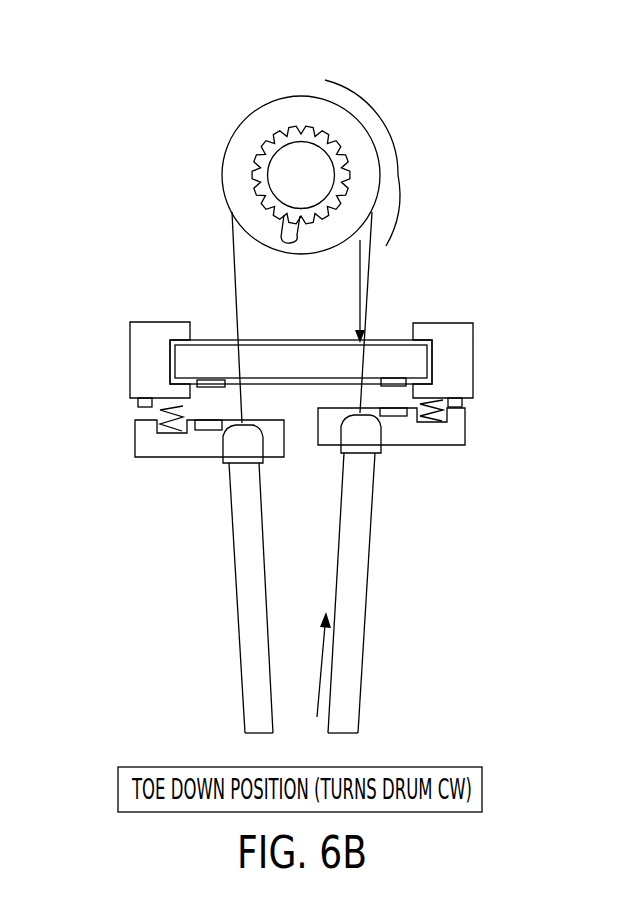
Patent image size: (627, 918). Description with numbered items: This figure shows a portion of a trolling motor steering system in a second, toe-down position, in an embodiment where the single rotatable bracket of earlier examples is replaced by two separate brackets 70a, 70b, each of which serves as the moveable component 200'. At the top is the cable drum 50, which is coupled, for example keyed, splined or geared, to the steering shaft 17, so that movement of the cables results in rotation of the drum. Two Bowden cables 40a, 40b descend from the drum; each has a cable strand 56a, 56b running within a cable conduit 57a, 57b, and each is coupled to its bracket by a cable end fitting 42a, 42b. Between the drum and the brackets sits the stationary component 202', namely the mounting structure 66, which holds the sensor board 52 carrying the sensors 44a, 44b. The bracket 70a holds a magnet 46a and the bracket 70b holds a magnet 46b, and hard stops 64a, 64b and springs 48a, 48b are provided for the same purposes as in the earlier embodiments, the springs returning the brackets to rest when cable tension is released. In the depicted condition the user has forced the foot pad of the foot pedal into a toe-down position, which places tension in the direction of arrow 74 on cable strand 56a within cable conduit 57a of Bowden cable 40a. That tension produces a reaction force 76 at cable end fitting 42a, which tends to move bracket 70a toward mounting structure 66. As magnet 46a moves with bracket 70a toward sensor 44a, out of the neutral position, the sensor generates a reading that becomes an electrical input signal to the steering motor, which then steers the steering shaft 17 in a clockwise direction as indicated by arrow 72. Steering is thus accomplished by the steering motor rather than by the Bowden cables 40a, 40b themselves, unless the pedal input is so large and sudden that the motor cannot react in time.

The cable drum 50 is at (300, 108).
The steering shaft 17 is at (307, 140).
The arrow 72 is at (398, 175).
The cable strand 56a is at (318, 274).
The cable strand 56b is at (232, 238).
The arrow 74 is at (358, 287).
The stationary component 202' is at (303, 360).
The mounting structure 66 is at (140, 330).
The sensor board 52 is at (228, 350).
The sensor 44a is at (387, 378).
The sensor 44b is at (210, 383).
The hard stop 64a is at (464, 407).
The hard stop 64b is at (145, 397).
The moveable component 200' is at (305, 464).
The bracket 70a is at (388, 440).
The bracket 70b is at (143, 440).
The spring 48a is at (443, 423).
The spring 48b is at (177, 430).
The magnet 46a is at (397, 417).
The magnet 46b is at (210, 431).
The cable end fitting 42a is at (348, 436).
The cable end fitting 42b is at (263, 453).
The Bowden cable 40a is at (382, 567).
The Bowden cable 40b is at (220, 577).
The cable conduit 57a is at (355, 690).
The cable conduit 57b is at (250, 693).
The reaction force 76 is at (322, 663).